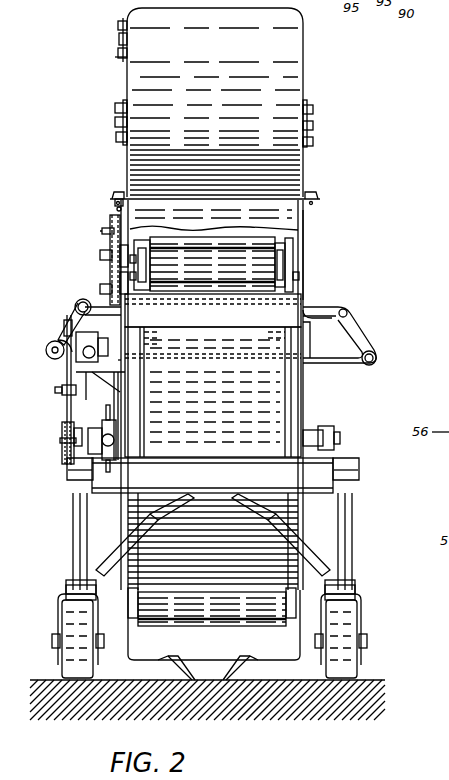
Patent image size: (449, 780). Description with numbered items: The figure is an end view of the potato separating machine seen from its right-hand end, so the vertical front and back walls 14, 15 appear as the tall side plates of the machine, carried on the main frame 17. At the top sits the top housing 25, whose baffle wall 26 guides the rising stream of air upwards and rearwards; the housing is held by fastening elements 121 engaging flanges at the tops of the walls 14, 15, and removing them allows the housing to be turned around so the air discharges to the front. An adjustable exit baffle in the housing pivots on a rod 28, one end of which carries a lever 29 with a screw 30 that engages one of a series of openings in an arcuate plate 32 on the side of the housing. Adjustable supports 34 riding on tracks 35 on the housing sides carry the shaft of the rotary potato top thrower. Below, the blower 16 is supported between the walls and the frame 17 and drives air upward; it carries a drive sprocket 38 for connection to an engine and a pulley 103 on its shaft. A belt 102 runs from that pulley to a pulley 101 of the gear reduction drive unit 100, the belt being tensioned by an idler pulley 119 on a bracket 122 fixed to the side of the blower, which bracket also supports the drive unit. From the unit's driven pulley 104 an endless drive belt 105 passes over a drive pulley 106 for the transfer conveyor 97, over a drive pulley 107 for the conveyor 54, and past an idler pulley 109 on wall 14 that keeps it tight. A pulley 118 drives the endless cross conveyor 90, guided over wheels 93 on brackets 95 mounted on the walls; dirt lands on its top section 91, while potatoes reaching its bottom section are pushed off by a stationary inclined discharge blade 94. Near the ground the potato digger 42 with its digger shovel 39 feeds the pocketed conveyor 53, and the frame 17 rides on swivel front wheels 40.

The front wall 14 is at (110, 252).
The back wall 15 is at (304, 242).
The blower 16 is at (278, 432).
The main frame 17 is at (188, 468).
The top housing 25 is at (306, 74).
The baffle wall 26 is at (292, 88).
The rod 28 is at (118, 30).
The lever 29 is at (119, 38).
The screw 30 is at (118, 58).
The arcuate plate 32 is at (118, 51).
The adjustable supports 34 is at (115, 118).
The tracks 35 is at (118, 143).
The drive sprocket 38 is at (107, 418).
The digger shovel 39 is at (235, 668).
The swivel front wheels 40 is at (62, 660).
The potato digger 42 is at (158, 662).
The conveyor 53 is at (218, 628).
The conveyor 54 is at (205, 250).
The endless cross conveyor 90 is at (221, 338).
The top section 91 is at (335, 304).
The wheels 93 is at (349, 312).
The stationary inclined discharge blade 94 is at (345, 349).
The brackets 95 is at (100, 307).
The endless conveyor 97 is at (228, 290).
The gear reduction drive unit 100 is at (86, 333).
The pulley 101 is at (64, 334).
The belt 102 is at (67, 412).
The pulley 103 is at (62, 450).
The driven pulley 104 is at (112, 360).
The endless drive belt 105 is at (115, 325).
The drive pulley 106 is at (118, 282).
The drive pulley 107 is at (113, 240).
The idler pulley 109 is at (116, 209).
The pulley 118 is at (50, 358).
The idler pulley 119 is at (62, 396).
The fastening elements 121 is at (120, 196).
The bracket 122 is at (110, 378).